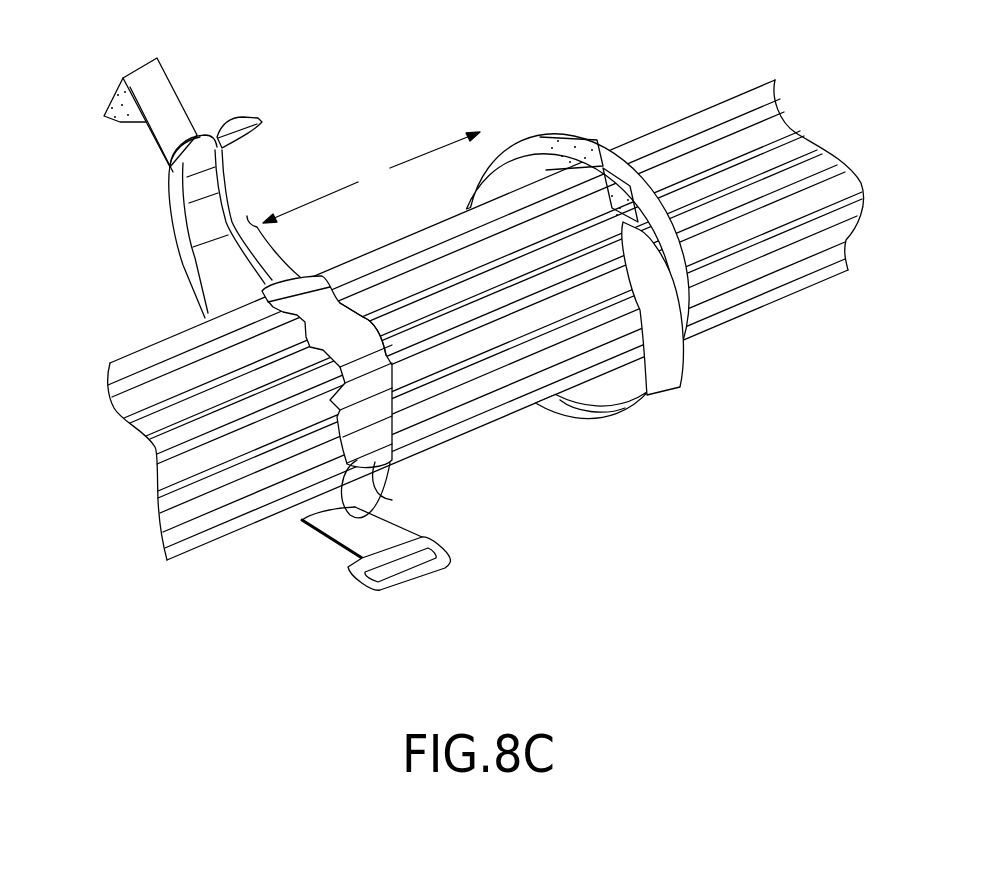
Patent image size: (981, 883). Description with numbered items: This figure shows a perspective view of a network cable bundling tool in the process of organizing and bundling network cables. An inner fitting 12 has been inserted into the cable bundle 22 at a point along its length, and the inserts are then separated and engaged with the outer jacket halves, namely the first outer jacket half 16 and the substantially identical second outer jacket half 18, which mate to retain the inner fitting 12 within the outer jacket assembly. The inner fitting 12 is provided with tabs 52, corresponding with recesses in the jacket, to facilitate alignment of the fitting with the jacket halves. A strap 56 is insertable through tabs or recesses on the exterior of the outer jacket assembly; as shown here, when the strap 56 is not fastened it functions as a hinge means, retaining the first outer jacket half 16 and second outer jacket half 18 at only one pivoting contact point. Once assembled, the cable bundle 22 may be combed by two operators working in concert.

The inner fitting 12 is at (250, 215).
The first outer jacket half 16 is at (226, 125).
The second outer jacket half 18 is at (303, 509).
The cable bundle 22 is at (766, 310).
The tabs 52 is at (363, 317).
The strap 56 is at (118, 143).